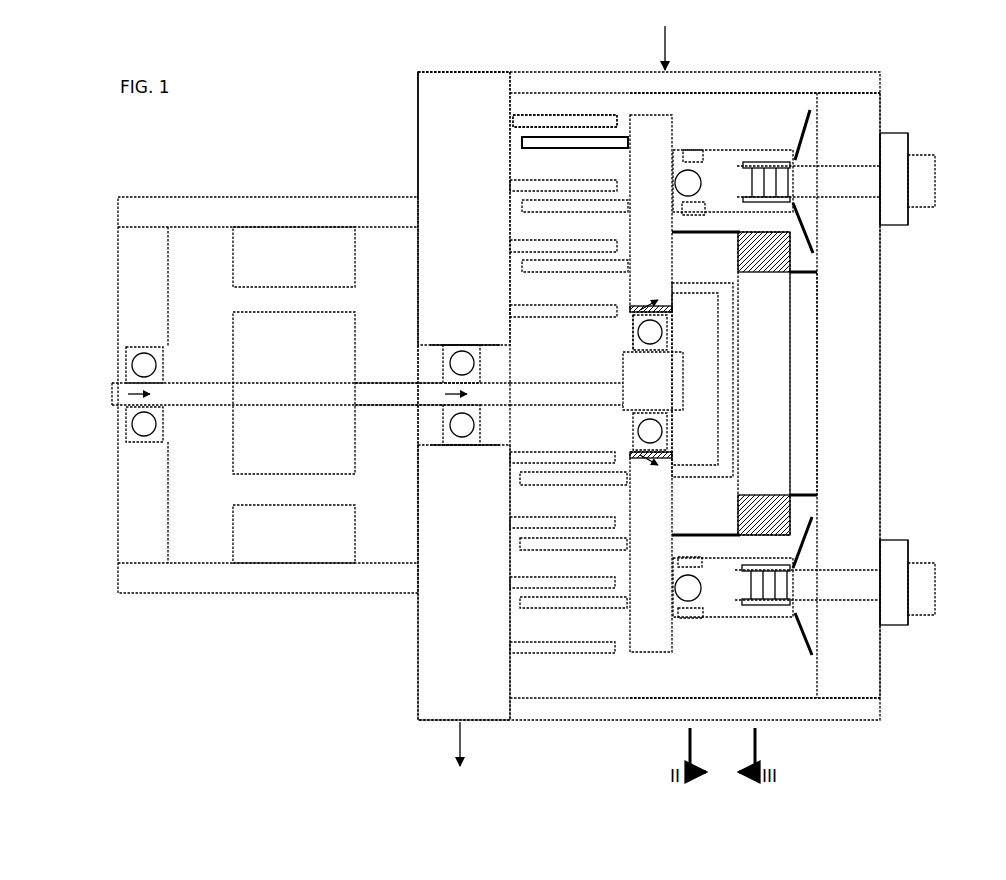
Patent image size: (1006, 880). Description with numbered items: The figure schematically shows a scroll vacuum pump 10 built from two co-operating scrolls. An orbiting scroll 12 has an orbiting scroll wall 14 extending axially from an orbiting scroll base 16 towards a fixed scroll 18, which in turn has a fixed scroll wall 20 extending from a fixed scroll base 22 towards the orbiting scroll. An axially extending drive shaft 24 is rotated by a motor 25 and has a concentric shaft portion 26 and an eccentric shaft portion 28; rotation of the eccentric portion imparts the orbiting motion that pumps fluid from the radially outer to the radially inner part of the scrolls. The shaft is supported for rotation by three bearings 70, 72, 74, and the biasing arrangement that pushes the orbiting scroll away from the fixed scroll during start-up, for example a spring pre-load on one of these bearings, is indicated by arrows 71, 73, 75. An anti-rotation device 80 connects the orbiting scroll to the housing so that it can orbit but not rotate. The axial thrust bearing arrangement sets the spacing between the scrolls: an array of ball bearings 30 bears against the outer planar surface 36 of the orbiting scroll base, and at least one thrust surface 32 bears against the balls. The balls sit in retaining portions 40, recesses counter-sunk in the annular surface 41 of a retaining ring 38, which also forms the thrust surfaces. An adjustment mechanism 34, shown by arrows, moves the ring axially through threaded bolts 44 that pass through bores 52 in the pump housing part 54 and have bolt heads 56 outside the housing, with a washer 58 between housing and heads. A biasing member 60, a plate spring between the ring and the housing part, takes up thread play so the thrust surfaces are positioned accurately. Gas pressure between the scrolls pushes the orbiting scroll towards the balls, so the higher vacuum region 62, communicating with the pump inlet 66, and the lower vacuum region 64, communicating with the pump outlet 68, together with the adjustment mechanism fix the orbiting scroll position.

The scroll vacuum pump 10 is at (322, 692).
The orbiting scroll 12 is at (651, 383).
The orbiting scroll wall 14 is at (598, 140).
The orbiting scroll base 16 is at (672, 235).
The fixed scroll 18 is at (464, 396).
The fixed scroll wall 20 is at (565, 115).
The fixed scroll base 22 is at (440, 160).
The drive shaft 24 is at (115, 400).
The motor 25 is at (268, 395).
The concentric shaft portion 26 is at (388, 405).
The eccentric shaft portion 28 is at (677, 405).
The ball bearings 30 is at (690, 180).
The thrust surface 32 is at (703, 210).
The adjustment mechanism 34 is at (880, 156).
The outer planar surface 36 is at (700, 93).
The retaining ring 38 is at (770, 205).
The retaining portions 40 is at (686, 150).
The annular surface 41 is at (683, 155).
The threaded bolts 44 is at (893, 190).
The bores 52 is at (830, 165).
The pump housing part 54 is at (862, 332).
The bolt heads 56 is at (930, 175).
The washer 58 is at (888, 215).
The biasing member 60 is at (800, 130).
The higher vacuum region 62 is at (805, 393).
The lower vacuum region 64 is at (566, 377).
The pump inlet 66 is at (666, 38).
The pump outlet 68 is at (461, 756).
The bearing 70 is at (128, 360).
The biasing arrangement arrow 71 is at (140, 425).
The bearing 72 is at (440, 372).
The biasing arrangement arrow 73 is at (450, 410).
The bearing 74 is at (630, 335).
The biasing arrangement arrow 75 is at (655, 305).
The anti-rotation device 80 is at (764, 383).